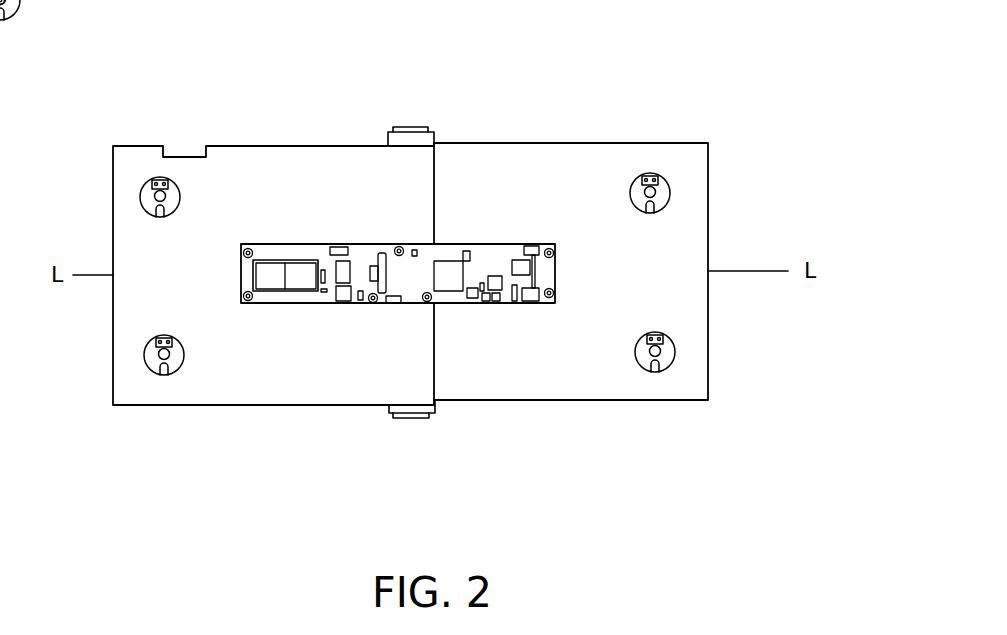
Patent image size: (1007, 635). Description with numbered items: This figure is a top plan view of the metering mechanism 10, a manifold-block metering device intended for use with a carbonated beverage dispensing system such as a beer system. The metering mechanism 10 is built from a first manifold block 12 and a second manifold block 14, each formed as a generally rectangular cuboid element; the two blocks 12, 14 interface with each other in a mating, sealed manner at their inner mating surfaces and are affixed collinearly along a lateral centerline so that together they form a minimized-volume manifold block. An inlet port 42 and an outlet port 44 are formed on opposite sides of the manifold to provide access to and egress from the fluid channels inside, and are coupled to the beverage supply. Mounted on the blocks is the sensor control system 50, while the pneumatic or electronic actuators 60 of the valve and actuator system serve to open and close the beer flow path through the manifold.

The metering mechanism 10 is at (733, 145).
The first manifold block 12 is at (158, 405).
The second manifold block 14 is at (653, 388).
The inlet port 42 is at (413, 127).
The outlet port 44 is at (420, 418).
The sensor control system 50 is at (387, 244).
The actuators 60 is at (661, 178).